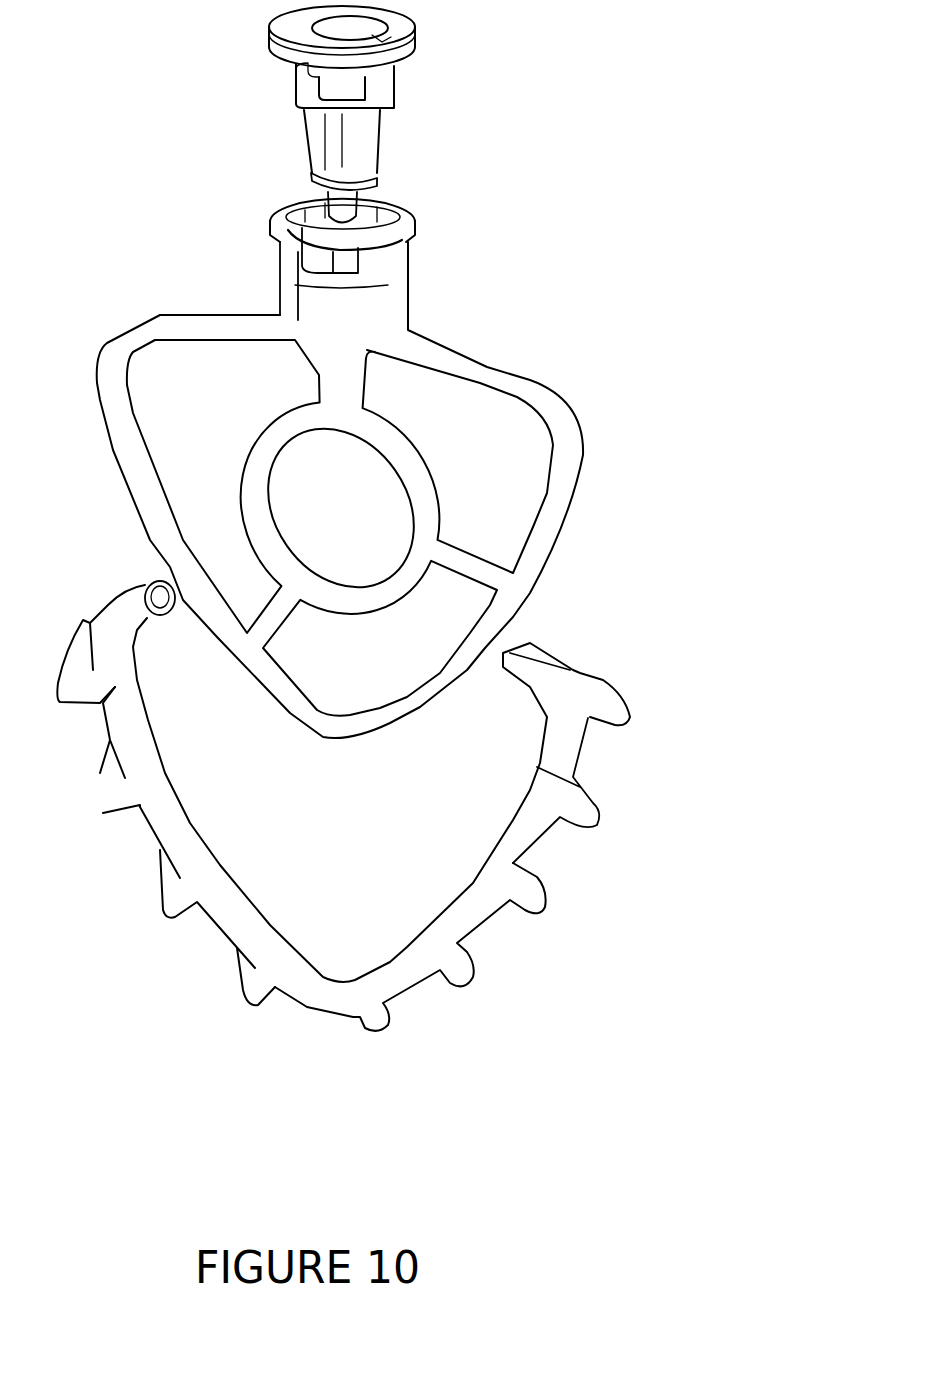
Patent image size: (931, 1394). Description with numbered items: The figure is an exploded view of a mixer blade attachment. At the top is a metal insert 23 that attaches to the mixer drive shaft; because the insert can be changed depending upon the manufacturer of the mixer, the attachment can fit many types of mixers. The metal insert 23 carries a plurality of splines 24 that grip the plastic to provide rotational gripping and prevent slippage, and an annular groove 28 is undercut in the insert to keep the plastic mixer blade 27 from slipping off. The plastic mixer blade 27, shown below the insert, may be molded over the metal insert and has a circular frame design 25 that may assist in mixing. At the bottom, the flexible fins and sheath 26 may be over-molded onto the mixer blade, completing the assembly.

The metal insert 23 is at (388, 97).
The splines 24 is at (338, 130).
The annular groove 28 is at (312, 173).
The plastic mixer blade 27 is at (485, 367).
The circular frame design 25 is at (432, 513).
The flexible fins and sheath 26 is at (583, 808).